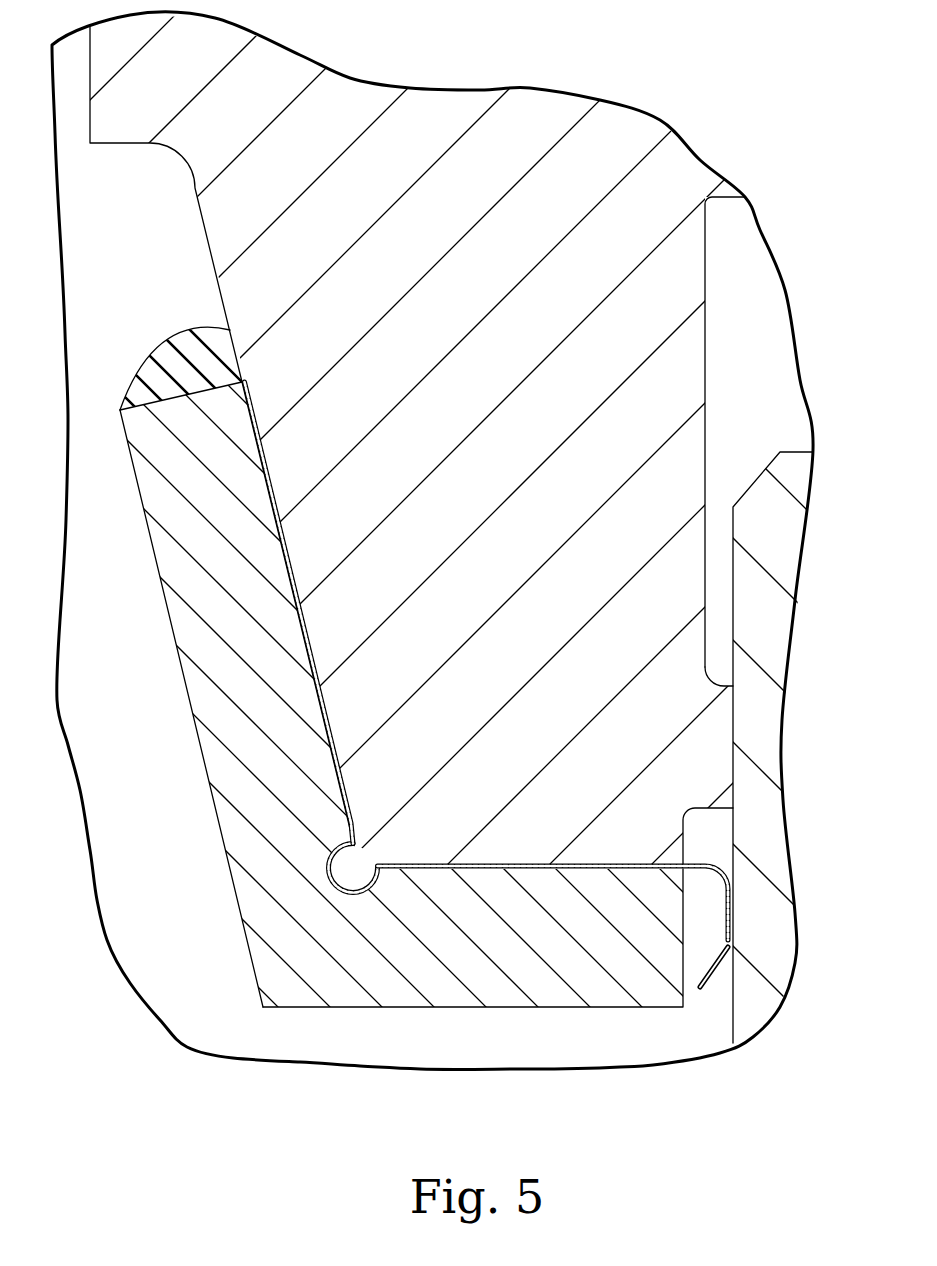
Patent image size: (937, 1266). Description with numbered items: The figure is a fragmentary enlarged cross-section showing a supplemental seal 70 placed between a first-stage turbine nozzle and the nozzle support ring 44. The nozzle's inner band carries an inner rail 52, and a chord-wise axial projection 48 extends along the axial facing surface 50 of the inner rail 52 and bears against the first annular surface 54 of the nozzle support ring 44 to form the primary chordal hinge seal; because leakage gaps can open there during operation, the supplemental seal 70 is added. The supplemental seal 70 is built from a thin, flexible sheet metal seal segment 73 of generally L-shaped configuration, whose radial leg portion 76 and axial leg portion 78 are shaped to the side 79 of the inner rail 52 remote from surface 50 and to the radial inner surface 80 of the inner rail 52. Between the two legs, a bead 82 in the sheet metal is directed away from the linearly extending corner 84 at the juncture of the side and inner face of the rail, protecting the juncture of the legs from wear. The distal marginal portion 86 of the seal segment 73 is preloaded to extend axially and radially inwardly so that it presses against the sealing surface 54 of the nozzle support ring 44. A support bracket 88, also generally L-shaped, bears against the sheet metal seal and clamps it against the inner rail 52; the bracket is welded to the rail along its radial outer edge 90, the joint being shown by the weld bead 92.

The nozzle support ring 44 is at (770, 630).
The axial projection 48 is at (712, 752).
The axial facing surface 50 is at (707, 330).
The inner rail 52 is at (459, 400).
The first annular surface 54 is at (717, 1027).
The supplemental seal 70 is at (148, 734).
The seal segment 73 is at (297, 588).
The radial leg portion 76 is at (287, 547).
The axial leg portion 78 is at (593, 867).
The side of the inner rail 79 is at (255, 418).
The radial inner surface 80 is at (552, 870).
The bead 82 is at (327, 858).
The linearly extending corner 84 is at (355, 893).
The distal marginal portion 86 is at (167, 617).
The support bracket 88 is at (210, 657).
The radial outer edge 90 is at (155, 395).
The weld bead 92 is at (192, 350).